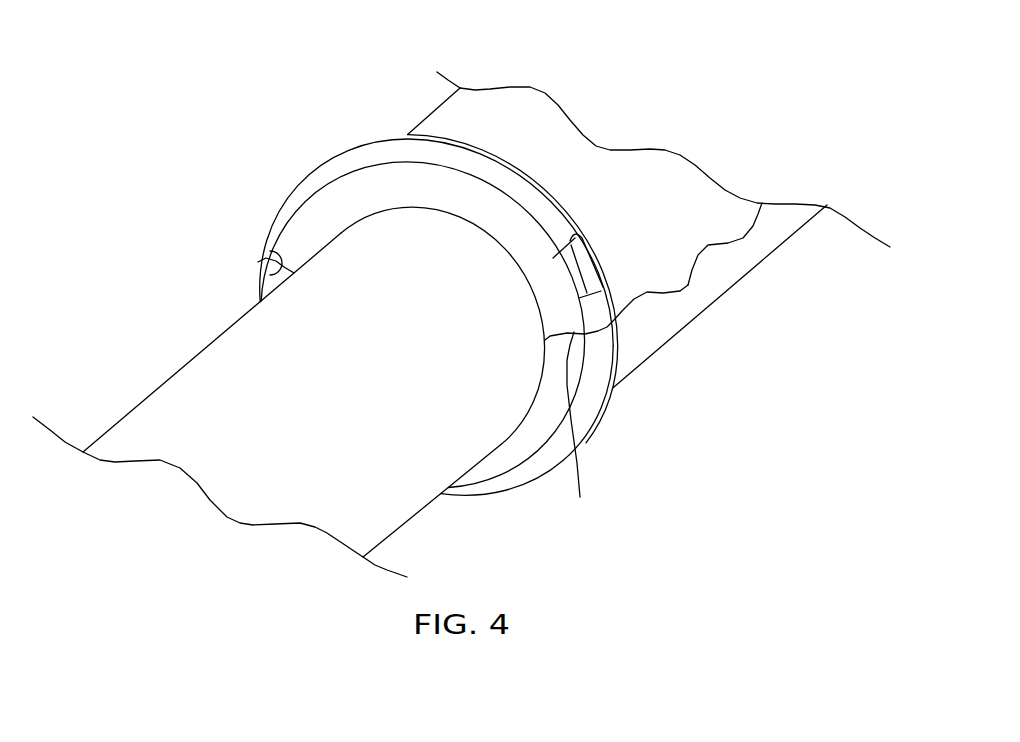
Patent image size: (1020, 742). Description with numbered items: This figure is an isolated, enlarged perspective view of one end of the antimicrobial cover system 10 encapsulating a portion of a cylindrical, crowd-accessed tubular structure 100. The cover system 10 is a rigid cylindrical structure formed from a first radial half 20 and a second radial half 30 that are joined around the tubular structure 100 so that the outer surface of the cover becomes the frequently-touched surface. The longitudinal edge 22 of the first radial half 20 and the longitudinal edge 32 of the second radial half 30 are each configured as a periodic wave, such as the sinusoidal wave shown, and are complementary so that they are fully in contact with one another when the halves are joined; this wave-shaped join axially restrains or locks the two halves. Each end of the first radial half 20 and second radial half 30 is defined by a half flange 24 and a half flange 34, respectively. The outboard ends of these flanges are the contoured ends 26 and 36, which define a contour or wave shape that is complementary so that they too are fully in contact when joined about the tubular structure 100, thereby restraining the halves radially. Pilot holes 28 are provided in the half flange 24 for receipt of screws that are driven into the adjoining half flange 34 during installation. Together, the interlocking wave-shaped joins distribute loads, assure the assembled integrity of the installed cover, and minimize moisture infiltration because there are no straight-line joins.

The cover system 10 is at (419, 288).
The first radial half 20 is at (649, 159).
The longitudinal edge 22 is at (640, 219).
The half flange 24 is at (439, 234).
The contoured end 26 is at (404, 325).
The pilot holes 28 is at (608, 338).
The second radial half 30 is at (720, 301).
The longitudinal edge 32 is at (738, 278).
The half flange 34 is at (527, 448).
The contoured end 36 is at (384, 391).
The tubular structure 100 is at (289, 392).